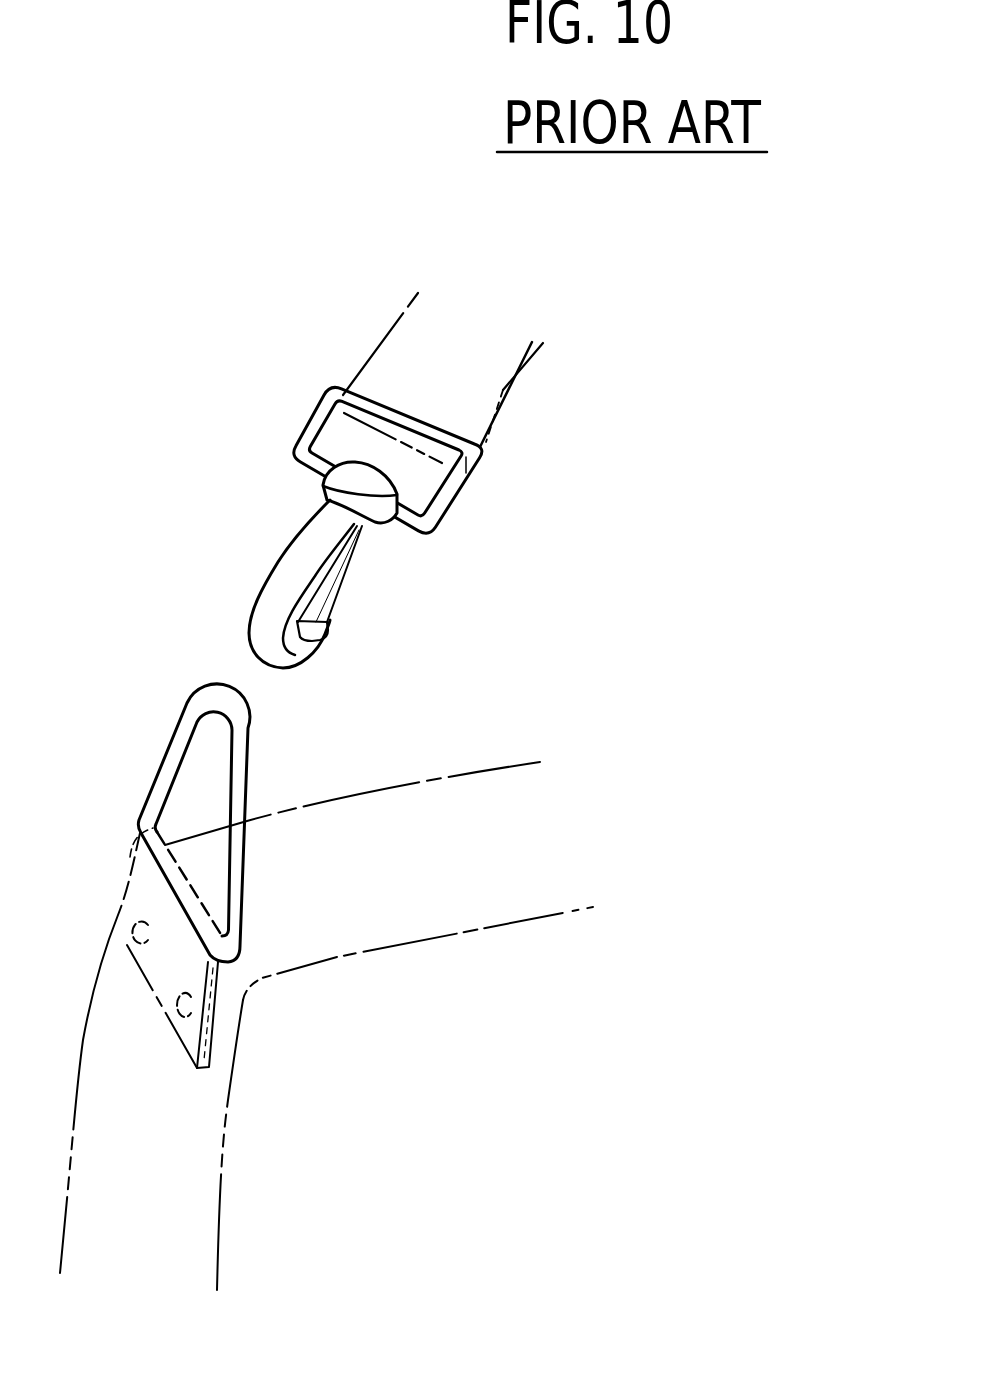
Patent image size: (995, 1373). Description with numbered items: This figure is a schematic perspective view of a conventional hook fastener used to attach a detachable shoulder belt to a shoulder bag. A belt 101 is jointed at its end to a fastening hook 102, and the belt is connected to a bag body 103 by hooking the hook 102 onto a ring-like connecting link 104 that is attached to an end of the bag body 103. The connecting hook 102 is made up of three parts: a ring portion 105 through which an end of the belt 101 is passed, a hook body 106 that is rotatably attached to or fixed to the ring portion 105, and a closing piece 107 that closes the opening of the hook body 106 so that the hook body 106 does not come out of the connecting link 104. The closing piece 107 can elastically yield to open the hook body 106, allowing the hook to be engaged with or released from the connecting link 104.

The belt 101 is at (483, 397).
The fastening hook 102 is at (482, 527).
The bag body 103 is at (422, 923).
The connecting link 104 is at (237, 727).
The ring portion 105 is at (445, 492).
The hook body 106 is at (335, 538).
The closing piece 107 is at (328, 578).